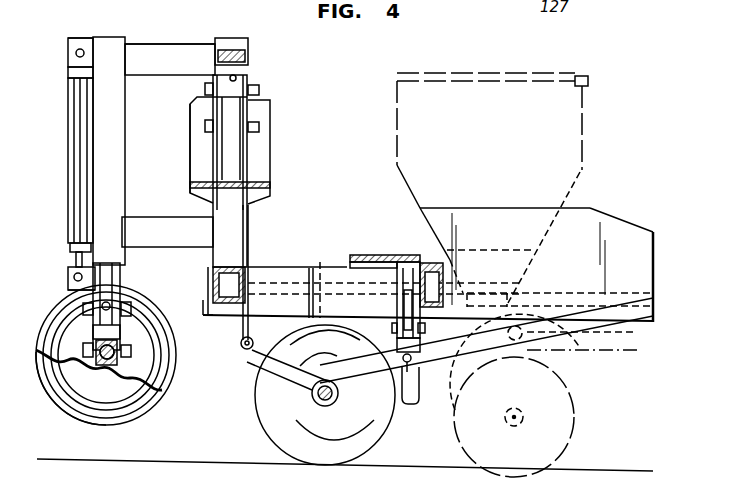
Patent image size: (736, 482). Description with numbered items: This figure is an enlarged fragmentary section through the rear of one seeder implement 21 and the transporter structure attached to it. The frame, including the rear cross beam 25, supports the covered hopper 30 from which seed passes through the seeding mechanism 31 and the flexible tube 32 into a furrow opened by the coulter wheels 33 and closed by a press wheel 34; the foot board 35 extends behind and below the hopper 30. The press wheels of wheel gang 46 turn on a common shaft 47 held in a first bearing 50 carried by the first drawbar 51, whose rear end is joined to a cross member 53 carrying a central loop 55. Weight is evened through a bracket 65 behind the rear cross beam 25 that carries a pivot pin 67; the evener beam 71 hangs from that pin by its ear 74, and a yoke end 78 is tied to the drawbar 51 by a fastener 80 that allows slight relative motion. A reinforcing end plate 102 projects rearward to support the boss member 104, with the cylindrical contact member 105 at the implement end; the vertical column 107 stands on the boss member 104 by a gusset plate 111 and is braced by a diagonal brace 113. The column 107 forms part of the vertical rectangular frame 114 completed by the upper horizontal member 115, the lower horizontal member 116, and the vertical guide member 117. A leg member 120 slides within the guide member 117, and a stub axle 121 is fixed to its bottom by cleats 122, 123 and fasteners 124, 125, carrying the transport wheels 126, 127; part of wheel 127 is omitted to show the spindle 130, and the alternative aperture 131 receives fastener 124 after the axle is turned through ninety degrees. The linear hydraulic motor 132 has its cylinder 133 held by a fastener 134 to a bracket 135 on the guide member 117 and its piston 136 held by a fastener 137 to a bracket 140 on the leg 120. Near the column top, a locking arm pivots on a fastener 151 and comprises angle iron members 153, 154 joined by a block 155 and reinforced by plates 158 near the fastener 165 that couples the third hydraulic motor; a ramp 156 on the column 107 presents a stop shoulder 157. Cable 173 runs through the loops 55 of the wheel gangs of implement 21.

The implement 21 is at (383, 188).
The rear cross beam 25 is at (443, 283).
The hopper 30 is at (578, 74).
The seeding mechanism 31 is at (515, 297).
The flexible tube 32 is at (477, 340).
The coulter wheels 33 is at (582, 416).
The press wheel 34 is at (280, 441).
The foot board 35 is at (365, 255).
The wheel gang 46 is at (250, 420).
The common shaft 47 is at (315, 402).
The first bearing 50 is at (324, 404).
The first drawbar 51 is at (365, 372).
The cross member 53 is at (270, 343).
The loop 55 is at (243, 349).
The bracket 65 is at (397, 281).
The pivot pin 67 is at (398, 305).
The evener beam 71 is at (404, 293).
The ear 74 is at (397, 341).
The yoke end 78 is at (419, 392).
The fastener 80 is at (405, 374).
The reinforcing end plate 102 is at (310, 268).
The boss member 104 is at (243, 280).
The cylindrical contact member 105 is at (321, 286).
The vertical column 107 is at (240, 225).
The gusset plate 111 is at (212, 264).
The diagonal brace 113 is at (238, 43).
The vertical rectangular frame 114 is at (165, 36).
The upper horizontal member 115 is at (176, 56).
The lower horizontal member 116 is at (141, 222).
The vertical guide member 117 is at (115, 138).
The leg member 120 is at (112, 278).
The stub axle 121 is at (105, 368).
The cleat 122 is at (83, 325).
The cleat 123 is at (125, 328).
The fastener 124 is at (132, 310).
The fastener 125 is at (131, 351).
The transport wheel 126 is at (167, 378).
The transport wheel 127 is at (137, 414).
The spindle 130 is at (131, 368).
The alternative aperture 131 is at (110, 306).
The linear hydraulic motor 132 is at (70, 160).
The cylinder 133 is at (75, 135).
The fastener 134 is at (83, 46).
The bracket 135 is at (72, 38).
The piston 136 is at (72, 253).
The fastener 137 is at (72, 273).
The bracket 140 is at (68, 287).
The fastener 151 is at (260, 89).
The angle iron member 153 is at (190, 152).
The angle iron member 154 is at (270, 150).
The block 155 is at (255, 187).
The ramp 156 is at (235, 112).
The stop shoulder 157 is at (240, 77).
The plate 158 is at (190, 106).
The fastener 165 is at (260, 127).
The cable 173 is at (250, 290).